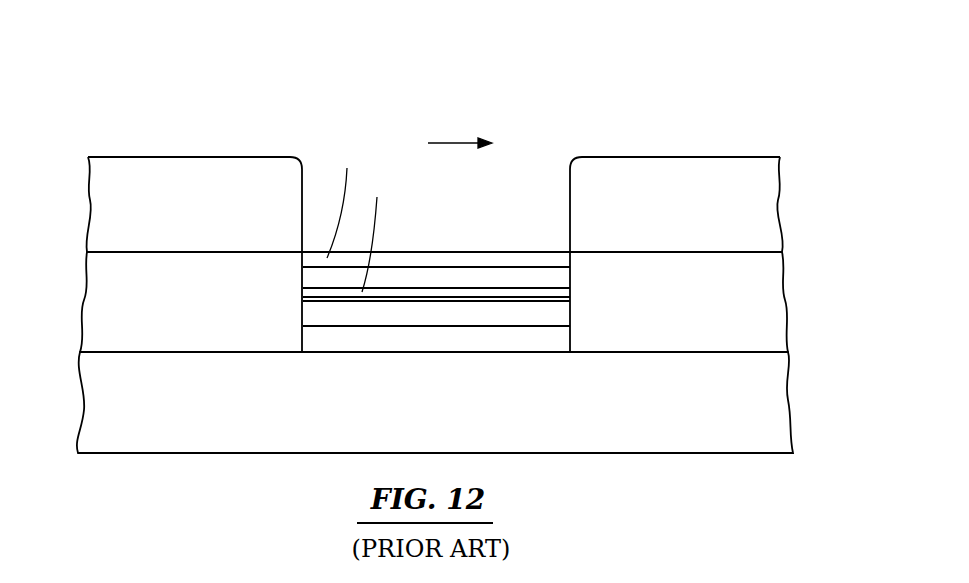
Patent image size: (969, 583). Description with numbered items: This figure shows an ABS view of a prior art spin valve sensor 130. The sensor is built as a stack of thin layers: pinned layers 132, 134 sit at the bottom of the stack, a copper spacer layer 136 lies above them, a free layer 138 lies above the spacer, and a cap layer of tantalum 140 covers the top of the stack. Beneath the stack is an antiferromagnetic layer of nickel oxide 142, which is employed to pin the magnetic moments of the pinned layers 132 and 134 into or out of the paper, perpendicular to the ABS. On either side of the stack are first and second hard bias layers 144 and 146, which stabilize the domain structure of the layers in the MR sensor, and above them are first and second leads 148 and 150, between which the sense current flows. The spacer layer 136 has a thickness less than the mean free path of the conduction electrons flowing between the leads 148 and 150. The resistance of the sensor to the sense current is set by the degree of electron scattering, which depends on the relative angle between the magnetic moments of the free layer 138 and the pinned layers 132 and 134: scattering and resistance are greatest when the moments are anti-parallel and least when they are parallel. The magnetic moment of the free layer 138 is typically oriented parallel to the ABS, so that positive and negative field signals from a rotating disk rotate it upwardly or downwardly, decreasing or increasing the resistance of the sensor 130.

The prior art spin valve sensor 130 is at (449, 88).
The pinned layer 132 is at (348, 340).
The pinned layer 134 is at (373, 316).
The copper spacer layer 136 is at (540, 293).
The free layer 138 is at (485, 277).
The cap layer of Ta 140 is at (427, 258).
The antiferromagnetic layer of NiO 142 is at (672, 428).
The first hard bias layer 144 is at (113, 298).
The second hard bias layer 146 is at (758, 298).
The first lead 148 is at (257, 183).
The second lead 150 is at (622, 183).